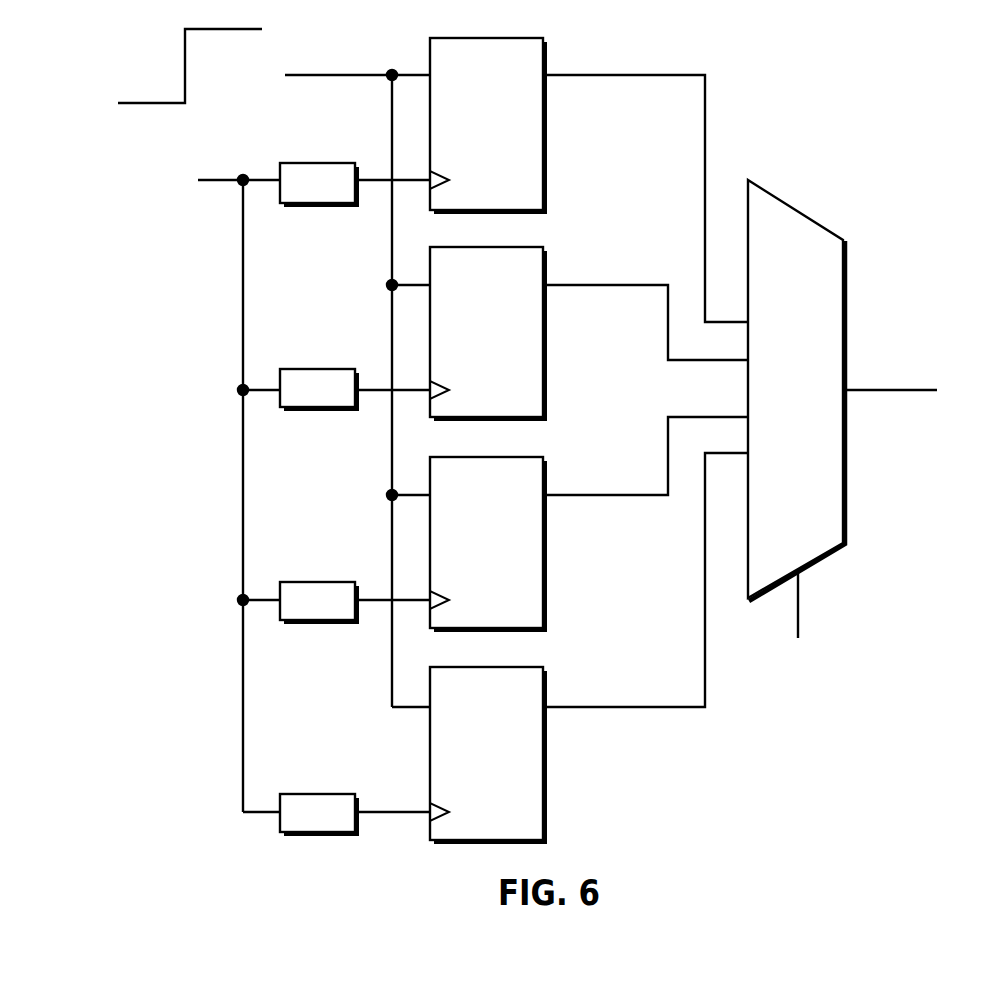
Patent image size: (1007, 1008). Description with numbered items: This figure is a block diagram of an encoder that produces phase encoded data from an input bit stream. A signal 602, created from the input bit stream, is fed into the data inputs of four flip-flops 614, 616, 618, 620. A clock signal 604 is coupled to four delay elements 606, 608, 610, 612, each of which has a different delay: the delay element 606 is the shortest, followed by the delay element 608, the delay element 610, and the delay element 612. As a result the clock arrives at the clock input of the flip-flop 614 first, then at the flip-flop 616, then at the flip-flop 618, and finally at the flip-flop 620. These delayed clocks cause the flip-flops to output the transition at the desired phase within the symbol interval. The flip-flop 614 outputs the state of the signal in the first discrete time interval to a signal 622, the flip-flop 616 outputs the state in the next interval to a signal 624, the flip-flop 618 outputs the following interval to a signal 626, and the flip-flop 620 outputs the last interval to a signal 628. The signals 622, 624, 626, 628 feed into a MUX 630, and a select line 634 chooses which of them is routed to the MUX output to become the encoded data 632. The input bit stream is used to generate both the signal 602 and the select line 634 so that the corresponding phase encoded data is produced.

The signal 602 is at (335, 385).
The clock signal 604 is at (205, 481).
The delay element 606 is at (355, 167).
The delay element 608 is at (355, 376).
The delay element 610 is at (355, 587).
The delay element 612 is at (355, 799).
The flip-flop 614 is at (488, 126).
The flip-flop 616 is at (488, 334).
The flip-flop 618 is at (488, 544).
The flip-flop 620 is at (488, 755).
The signal 622 is at (647, 180).
The signal 624 is at (647, 304).
The signal 626 is at (647, 456).
The signal 628 is at (647, 580).
The MUX 630 is at (796, 390).
The encoded data 632 is at (910, 359).
The select line 634 is at (797, 625).